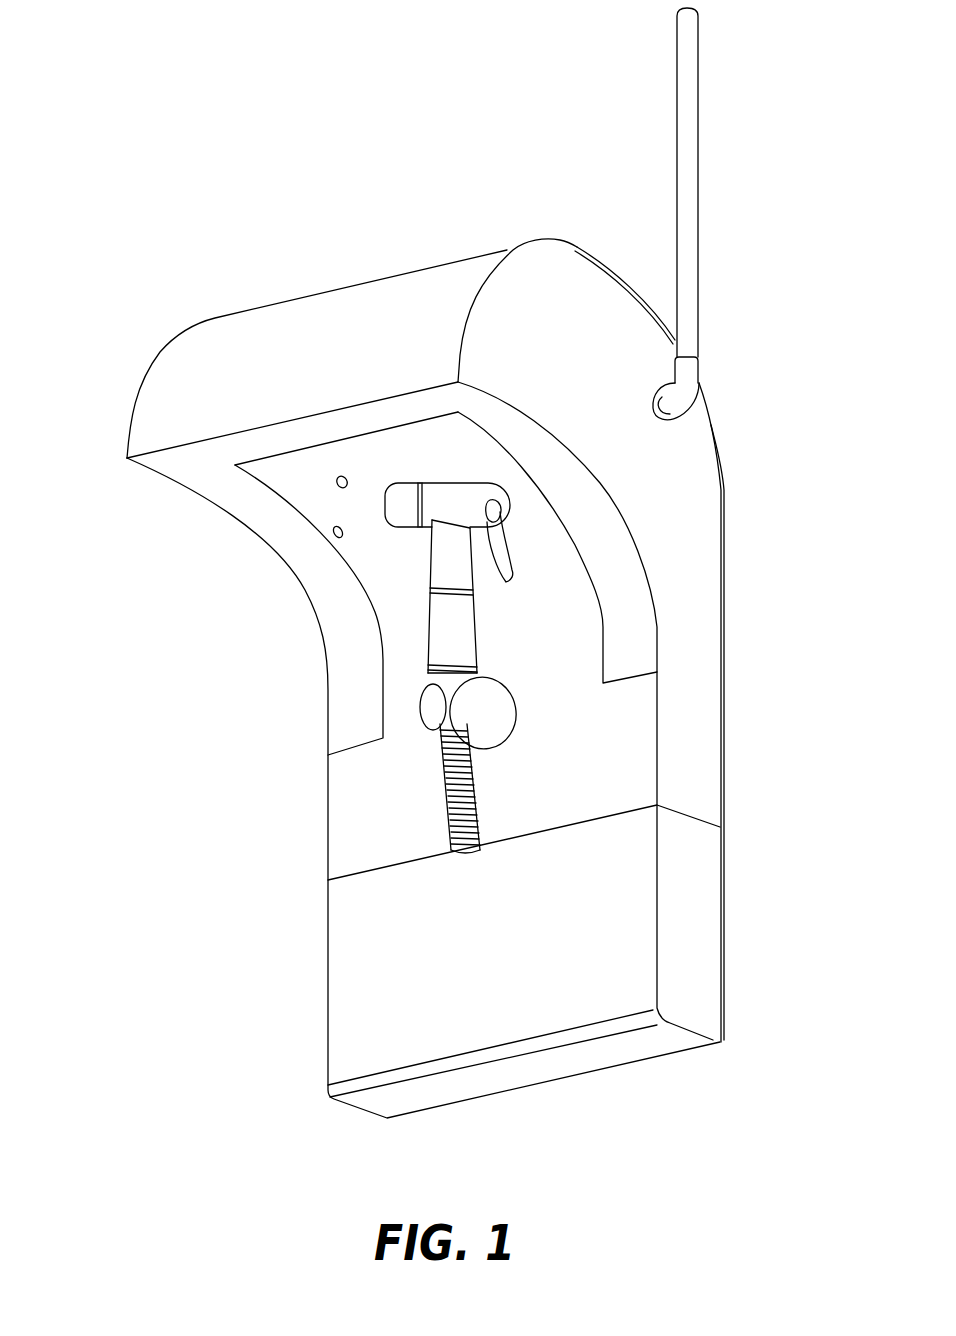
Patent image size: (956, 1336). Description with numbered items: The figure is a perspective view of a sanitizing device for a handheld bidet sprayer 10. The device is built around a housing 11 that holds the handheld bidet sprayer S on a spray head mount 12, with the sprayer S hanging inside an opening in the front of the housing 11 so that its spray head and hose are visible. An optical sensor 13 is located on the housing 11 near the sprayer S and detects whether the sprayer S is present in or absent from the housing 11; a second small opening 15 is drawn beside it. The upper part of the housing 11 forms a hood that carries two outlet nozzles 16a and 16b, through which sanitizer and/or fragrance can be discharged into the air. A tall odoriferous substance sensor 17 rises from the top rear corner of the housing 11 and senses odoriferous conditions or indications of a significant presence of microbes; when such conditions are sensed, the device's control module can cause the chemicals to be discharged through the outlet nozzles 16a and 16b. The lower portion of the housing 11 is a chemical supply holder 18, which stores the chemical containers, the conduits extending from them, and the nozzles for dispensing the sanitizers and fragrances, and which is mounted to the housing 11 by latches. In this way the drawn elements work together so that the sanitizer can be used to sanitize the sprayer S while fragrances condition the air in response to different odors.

The sanitizing device for a handheld bidet sprayer 10 is at (137, 161).
The housing 11 is at (683, 573).
The spray head mount 12 is at (497, 713).
The optical sensor 13 is at (336, 538).
The mounting hole 15 is at (338, 486).
The outlet nozzle 16a is at (186, 401).
The outlet nozzle 16b is at (402, 350).
The odoriferous substance sensor 17 is at (706, 173).
The chemical supply holder 18 is at (693, 917).
The handheld bidet sprayer S is at (450, 627).